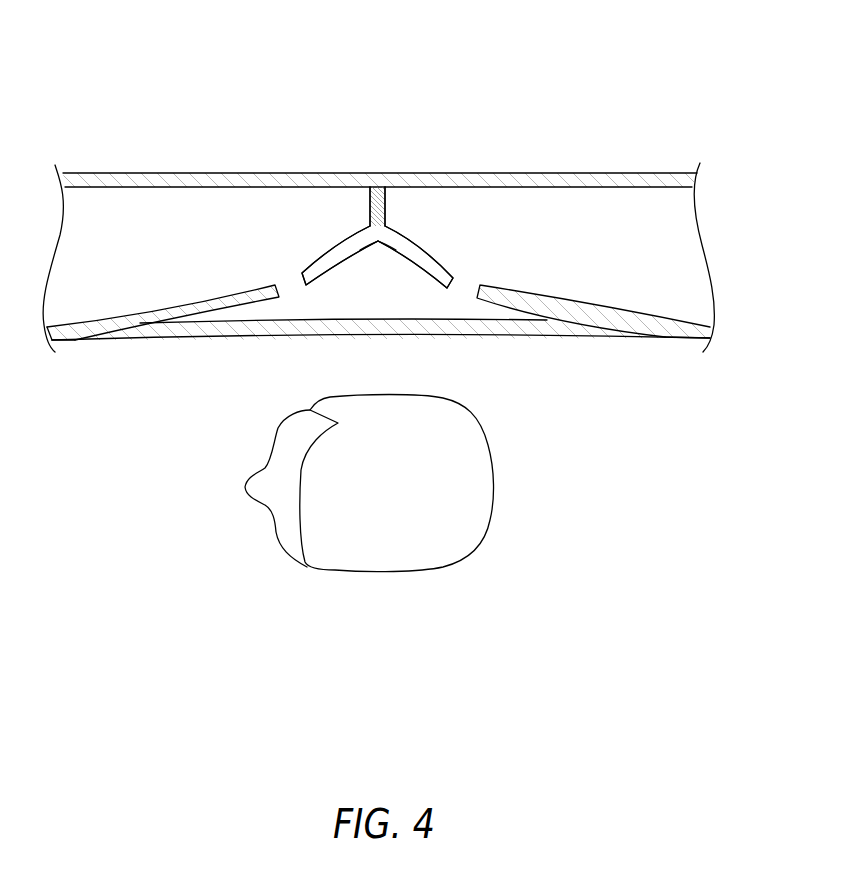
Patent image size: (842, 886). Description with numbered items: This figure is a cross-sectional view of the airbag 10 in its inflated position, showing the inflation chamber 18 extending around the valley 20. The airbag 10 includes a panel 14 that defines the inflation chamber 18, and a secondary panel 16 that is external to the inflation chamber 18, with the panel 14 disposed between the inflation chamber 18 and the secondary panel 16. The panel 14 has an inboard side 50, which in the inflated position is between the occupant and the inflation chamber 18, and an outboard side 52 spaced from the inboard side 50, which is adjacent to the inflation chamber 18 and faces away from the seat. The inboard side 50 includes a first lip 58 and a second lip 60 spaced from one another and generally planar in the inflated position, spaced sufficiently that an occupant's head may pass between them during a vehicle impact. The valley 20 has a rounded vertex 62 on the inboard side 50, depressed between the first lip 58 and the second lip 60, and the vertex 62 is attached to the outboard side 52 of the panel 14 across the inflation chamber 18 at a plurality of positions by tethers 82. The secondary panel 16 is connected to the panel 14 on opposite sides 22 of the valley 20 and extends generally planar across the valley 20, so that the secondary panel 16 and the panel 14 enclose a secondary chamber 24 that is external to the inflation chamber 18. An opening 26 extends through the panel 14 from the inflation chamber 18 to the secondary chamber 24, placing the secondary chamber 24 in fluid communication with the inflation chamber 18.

The airbag 10 is at (714, 62).
The panel 14 is at (380, 127).
The secondary panel 16 is at (380, 354).
The inflation chamber 18 is at (122, 214).
The valley 20 is at (379, 224).
The opposite sides 22 is at (338, 254).
The secondary chamber 24 is at (307, 297).
The opening 26 is at (463, 299).
The inboard side 50 is at (65, 340).
The outboard side 52 is at (140, 172).
The first lip 58 is at (88, 350).
The second lip 60 is at (667, 347).
The vertex 62 is at (382, 244).
The tethers 82 is at (386, 206).